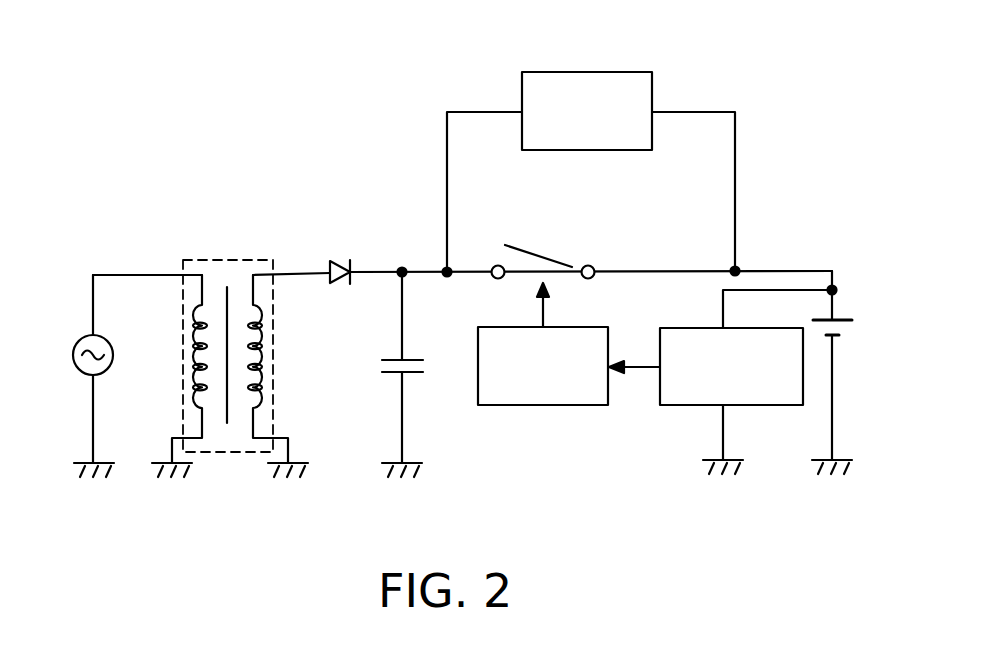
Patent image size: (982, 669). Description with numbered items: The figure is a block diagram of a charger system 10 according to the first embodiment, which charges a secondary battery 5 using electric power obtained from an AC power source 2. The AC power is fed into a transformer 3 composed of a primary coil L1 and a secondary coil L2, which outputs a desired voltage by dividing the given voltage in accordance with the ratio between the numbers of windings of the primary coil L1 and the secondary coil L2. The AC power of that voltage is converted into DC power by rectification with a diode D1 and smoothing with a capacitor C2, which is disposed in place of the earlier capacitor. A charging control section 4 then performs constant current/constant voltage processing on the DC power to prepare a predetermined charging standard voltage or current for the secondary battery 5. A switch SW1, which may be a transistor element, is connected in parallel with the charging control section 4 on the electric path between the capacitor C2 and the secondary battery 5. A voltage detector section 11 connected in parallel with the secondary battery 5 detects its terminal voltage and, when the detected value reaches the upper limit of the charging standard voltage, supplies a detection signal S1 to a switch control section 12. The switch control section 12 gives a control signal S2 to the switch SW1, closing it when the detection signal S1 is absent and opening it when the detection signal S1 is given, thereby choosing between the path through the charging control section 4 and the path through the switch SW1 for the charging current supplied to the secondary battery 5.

The AC power source 2 is at (73, 349).
The transformer 3 is at (239, 337).
The primary coil L1 is at (190, 336).
The secondary coil L2 is at (268, 353).
The charger system 10 is at (281, 164).
The diode D1 is at (338, 258).
The capacitor C2 is at (416, 376).
The charging control section 4 is at (583, 72).
The switch SW1 is at (550, 252).
The control signal S2 is at (545, 316).
The switch control section 12 is at (548, 408).
The detection signal S1 is at (645, 370).
The voltage detector section 11 is at (765, 408).
The secondary battery 5 is at (838, 310).